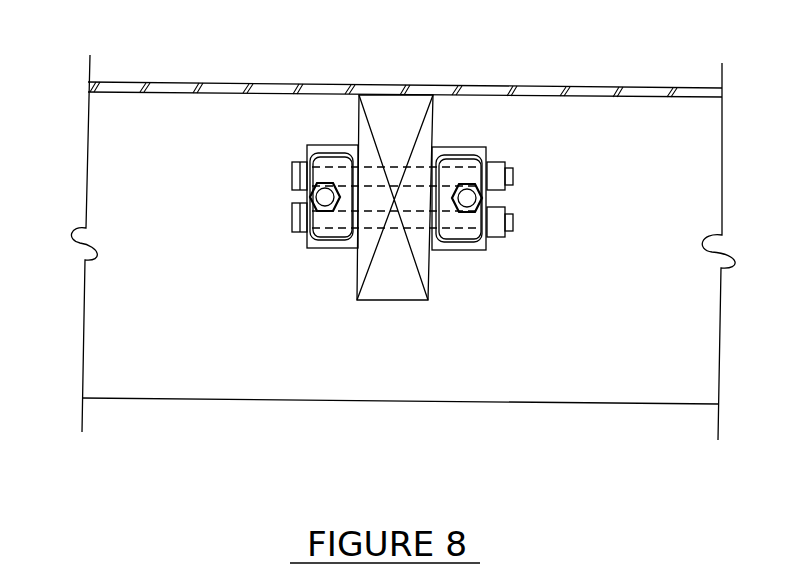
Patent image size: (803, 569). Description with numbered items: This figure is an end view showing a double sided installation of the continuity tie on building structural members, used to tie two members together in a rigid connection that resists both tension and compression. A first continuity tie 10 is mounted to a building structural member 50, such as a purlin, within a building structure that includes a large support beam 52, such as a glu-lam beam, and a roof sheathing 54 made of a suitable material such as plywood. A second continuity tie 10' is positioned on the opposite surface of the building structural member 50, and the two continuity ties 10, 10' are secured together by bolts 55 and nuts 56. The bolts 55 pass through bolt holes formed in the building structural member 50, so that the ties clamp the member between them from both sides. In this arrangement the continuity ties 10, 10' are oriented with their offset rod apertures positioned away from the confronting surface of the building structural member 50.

The continuity tie 10 is at (257, 125).
The second continuity tie 10' is at (551, 237).
The building structural member 50 is at (375, 302).
The support beam 52 is at (517, 405).
The roof sheathing 54 is at (533, 88).
The bolts 55 is at (292, 230).
The nuts 56 is at (506, 207).